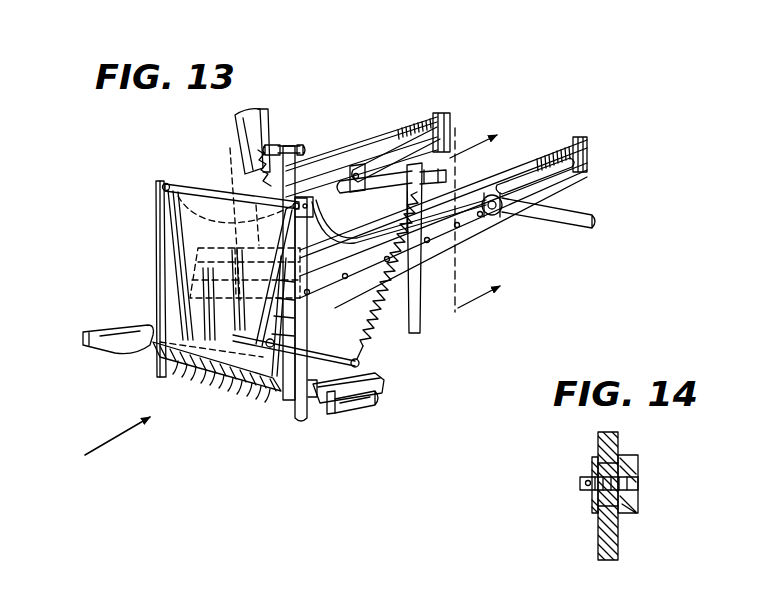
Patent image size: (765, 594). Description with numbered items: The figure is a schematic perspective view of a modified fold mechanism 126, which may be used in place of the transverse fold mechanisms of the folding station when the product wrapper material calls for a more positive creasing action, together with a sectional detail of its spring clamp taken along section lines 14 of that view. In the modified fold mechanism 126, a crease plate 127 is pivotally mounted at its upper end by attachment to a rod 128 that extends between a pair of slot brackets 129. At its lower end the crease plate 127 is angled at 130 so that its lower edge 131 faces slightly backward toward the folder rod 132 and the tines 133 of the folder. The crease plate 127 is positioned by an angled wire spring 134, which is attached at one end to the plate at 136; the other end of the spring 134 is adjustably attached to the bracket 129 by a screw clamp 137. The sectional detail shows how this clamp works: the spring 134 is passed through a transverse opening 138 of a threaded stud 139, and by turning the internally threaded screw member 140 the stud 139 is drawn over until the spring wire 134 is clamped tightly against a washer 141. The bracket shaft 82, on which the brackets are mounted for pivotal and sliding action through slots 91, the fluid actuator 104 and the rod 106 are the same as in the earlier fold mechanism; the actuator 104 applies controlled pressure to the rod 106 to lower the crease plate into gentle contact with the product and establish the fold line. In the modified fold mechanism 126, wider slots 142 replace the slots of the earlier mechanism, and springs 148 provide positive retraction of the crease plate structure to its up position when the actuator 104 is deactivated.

In FIG. 13, the modified fold mechanism 126 is at (128, 193).
In FIG. 13, the crease plate 127 is at (172, 307).
In FIG. 13, the rod 128 is at (186, 182).
In FIG. 13, the rod 106 is at (240, 185).
In FIG. 13, the fluid actuator 104 is at (262, 120).
In FIG. 13, the springs 148 is at (297, 170).
In FIG. 13, the wider slots 142 is at (166, 283).
In FIG. 13, the angle 130 is at (148, 349).
In FIG. 13, the tines 133 is at (221, 388).
In FIG. 13, the lower edge 131 is at (270, 392).
In FIG. 13, the slots 91 is at (393, 148).
In FIG. 13, the slot brackets 129 is at (447, 120).
In FIG. 14, the slot brackets 129 is at (620, 433).
In FIG. 13, the section lines 14 is at (488, 216).
In FIG. 13, the angled wire spring 134 is at (342, 238).
In FIG. 13, the screw clamp 137 is at (458, 228).
In FIG. 13, the bracket shaft 82 is at (558, 223).
In FIG. 13, the spring attachment point 136 is at (358, 345).
In FIG. 13, the folder rod 132 is at (362, 350).
In FIG. 14, the internally threaded screw member 140 is at (638, 493).
In FIG. 14, the washer 141 is at (598, 463).
In FIG. 14, the threaded stud 139 is at (580, 482).
In FIG. 14, the transverse opening 138 is at (590, 492).